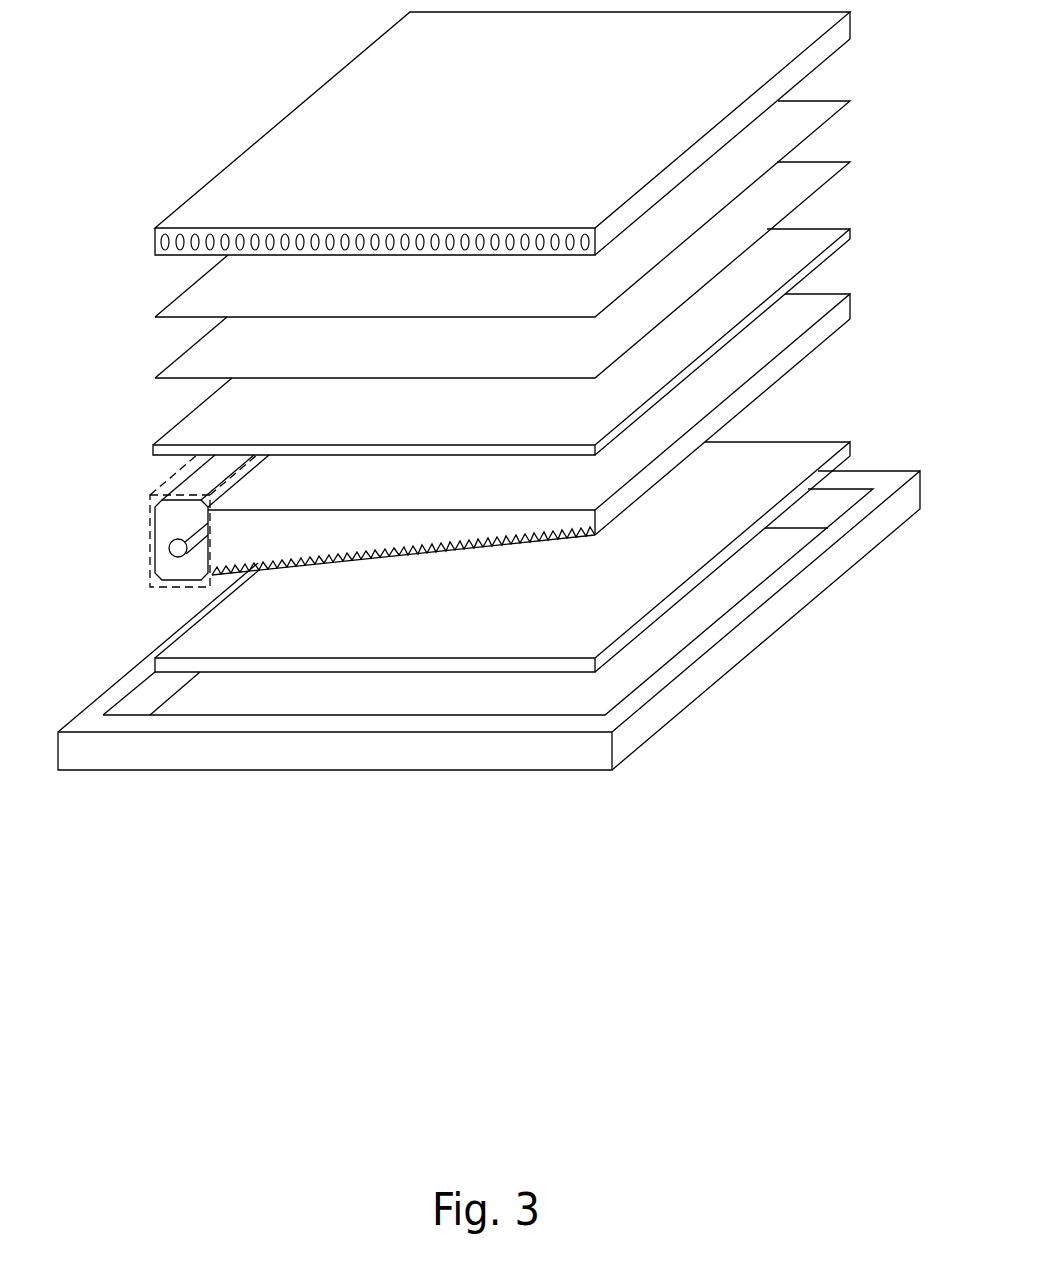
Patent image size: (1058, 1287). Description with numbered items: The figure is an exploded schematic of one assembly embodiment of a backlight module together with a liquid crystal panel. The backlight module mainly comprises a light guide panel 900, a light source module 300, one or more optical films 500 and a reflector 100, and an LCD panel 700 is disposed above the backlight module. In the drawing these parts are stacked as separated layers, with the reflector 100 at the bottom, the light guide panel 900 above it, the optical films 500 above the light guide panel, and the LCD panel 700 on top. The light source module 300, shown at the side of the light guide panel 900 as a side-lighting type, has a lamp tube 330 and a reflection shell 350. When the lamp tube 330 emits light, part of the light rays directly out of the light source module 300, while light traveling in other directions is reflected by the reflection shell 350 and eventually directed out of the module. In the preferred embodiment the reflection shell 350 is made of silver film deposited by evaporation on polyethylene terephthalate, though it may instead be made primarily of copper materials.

The LCD panel 700 is at (840, 33).
The optical films 500 is at (855, 88).
The light guide panel 900 is at (818, 303).
The reflector 100 is at (588, 617).
The light source module 300 is at (162, 493).
The lamp tube 330 is at (187, 553).
The reflection shell 350 is at (153, 578).